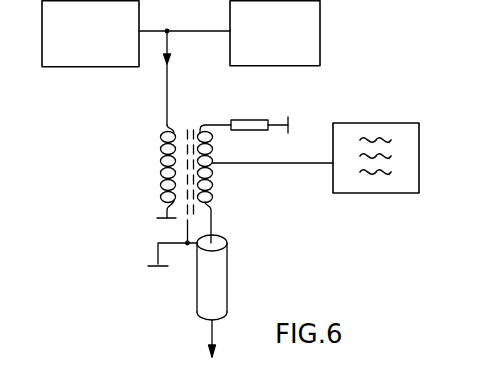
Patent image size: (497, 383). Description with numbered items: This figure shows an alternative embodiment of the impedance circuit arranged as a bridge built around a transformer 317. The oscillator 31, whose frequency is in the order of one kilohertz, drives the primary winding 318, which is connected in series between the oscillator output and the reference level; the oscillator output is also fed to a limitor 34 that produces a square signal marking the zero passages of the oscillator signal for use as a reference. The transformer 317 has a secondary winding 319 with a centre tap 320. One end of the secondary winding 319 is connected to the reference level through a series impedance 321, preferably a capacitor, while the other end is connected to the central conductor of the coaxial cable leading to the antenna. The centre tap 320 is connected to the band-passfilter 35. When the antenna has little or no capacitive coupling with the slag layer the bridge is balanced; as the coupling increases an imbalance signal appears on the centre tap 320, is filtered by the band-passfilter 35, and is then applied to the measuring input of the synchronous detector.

The oscillator 31 is at (79, 42).
The limitor 34 is at (263, 40).
The transformer 317 is at (189, 123).
The primary winding 318 is at (160, 173).
The centre tap 320 is at (212, 166).
The secondary winding 319 is at (206, 200).
The series impedance 321 is at (261, 110).
The band-passfilter 35 is at (411, 123).